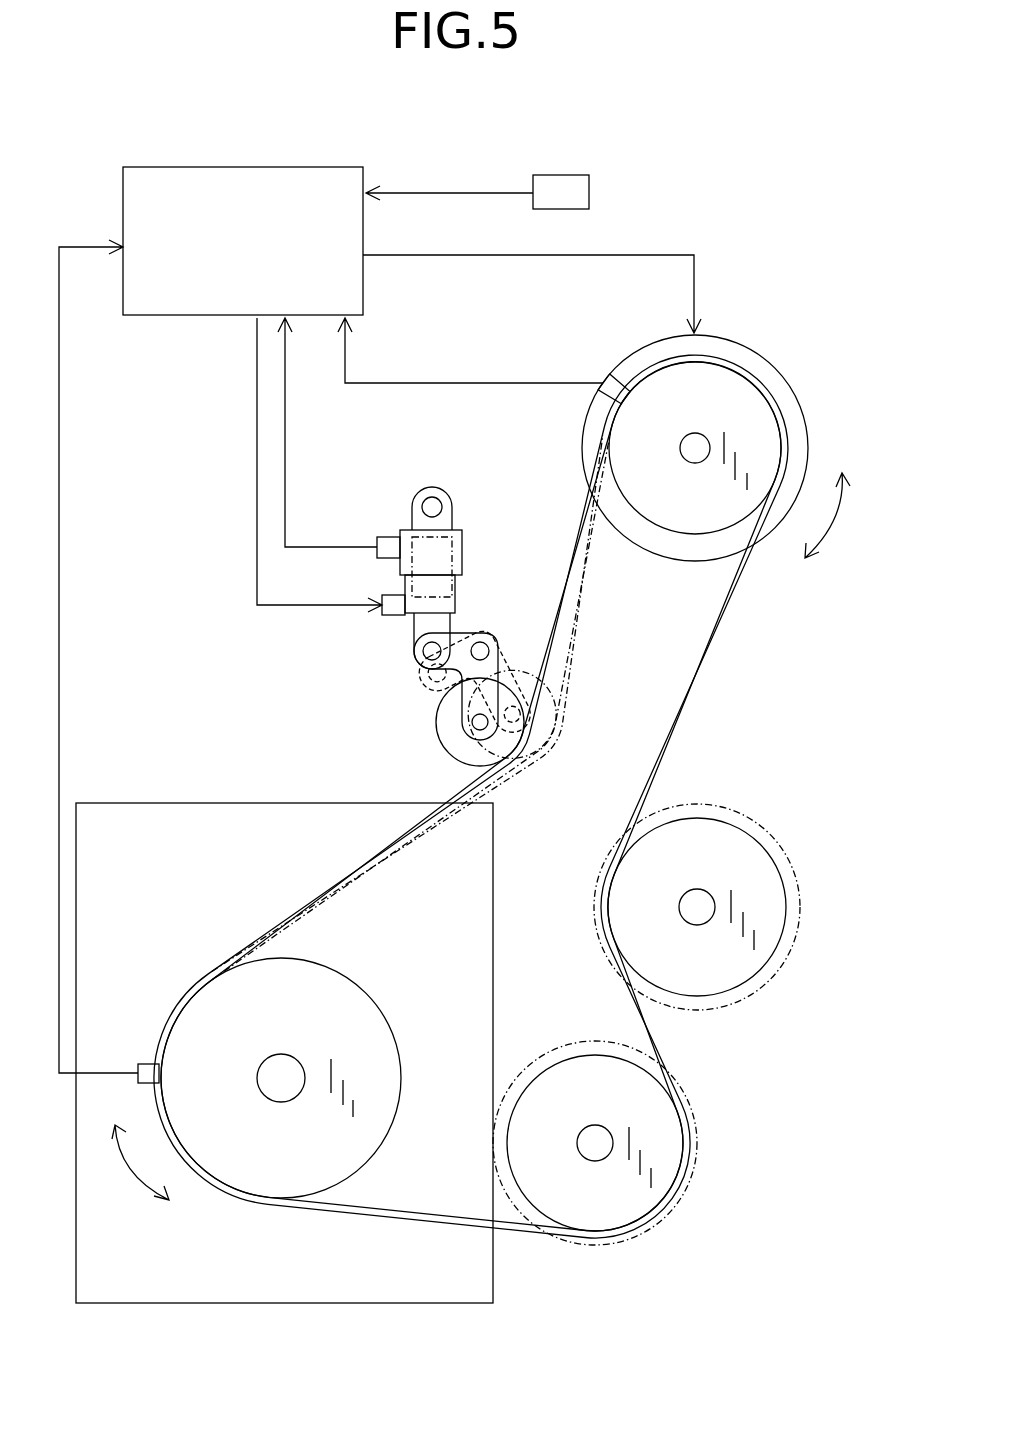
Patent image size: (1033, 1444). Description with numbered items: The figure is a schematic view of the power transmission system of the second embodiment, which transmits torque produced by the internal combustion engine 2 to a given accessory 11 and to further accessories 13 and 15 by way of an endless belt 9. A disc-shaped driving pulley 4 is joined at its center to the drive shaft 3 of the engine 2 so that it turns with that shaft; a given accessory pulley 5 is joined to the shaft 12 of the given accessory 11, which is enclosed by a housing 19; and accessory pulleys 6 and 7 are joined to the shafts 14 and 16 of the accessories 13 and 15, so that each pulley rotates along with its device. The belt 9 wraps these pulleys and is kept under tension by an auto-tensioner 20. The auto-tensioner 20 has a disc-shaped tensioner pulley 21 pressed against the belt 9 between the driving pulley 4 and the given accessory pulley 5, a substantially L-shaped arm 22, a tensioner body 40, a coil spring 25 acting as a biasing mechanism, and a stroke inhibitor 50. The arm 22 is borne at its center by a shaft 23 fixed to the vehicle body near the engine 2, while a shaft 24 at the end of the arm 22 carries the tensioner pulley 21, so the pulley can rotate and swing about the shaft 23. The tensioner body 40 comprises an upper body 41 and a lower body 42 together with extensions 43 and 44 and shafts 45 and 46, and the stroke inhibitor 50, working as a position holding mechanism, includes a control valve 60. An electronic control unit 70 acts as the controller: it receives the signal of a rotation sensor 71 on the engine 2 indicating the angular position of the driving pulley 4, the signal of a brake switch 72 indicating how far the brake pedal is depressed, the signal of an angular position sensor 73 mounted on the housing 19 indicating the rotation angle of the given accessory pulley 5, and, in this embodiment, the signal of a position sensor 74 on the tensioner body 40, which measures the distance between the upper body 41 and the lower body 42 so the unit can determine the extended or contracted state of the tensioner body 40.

The internal combustion engine 2 is at (178, 800).
The drive shaft 3 is at (275, 1060).
The driving pulley 4 is at (256, 1105).
The given accessory pulley 5 is at (677, 527).
The accessory pulley 6 is at (713, 990).
The accessory pulley 7 is at (604, 1230).
The belt 9 is at (712, 650).
The given accessory 11 is at (716, 437).
The shaft 12 is at (693, 436).
The accessory 13 is at (697, 896).
The shaft 14 is at (697, 888).
The accessory 15 is at (595, 1136).
The shaft 16 is at (594, 1124).
The housing 19 is at (760, 368).
The auto-tensioner 20 is at (412, 735).
The tensioner pulley 21 is at (463, 735).
The arm 22 is at (440, 690).
The shaft 23 is at (490, 652).
The shaft 24 is at (455, 750).
The coil spring 25 is at (402, 588).
The tensioner body 40 is at (405, 571).
The upper body 41 is at (462, 540).
The lower body 42 is at (457, 594).
The extension 43 is at (452, 515).
The extension 44 is at (440, 628).
The shaft 45 is at (422, 507).
The shaft 46 is at (418, 665).
The stroke inhibitor 50 is at (391, 651).
The control valve 60 is at (381, 632).
The electronic control unit 70 is at (222, 170).
The rotation sensor 71 is at (146, 1062).
The brake switch 72 is at (557, 178).
The angular position sensor 73 is at (613, 378).
The position sensor 74 is at (375, 544).